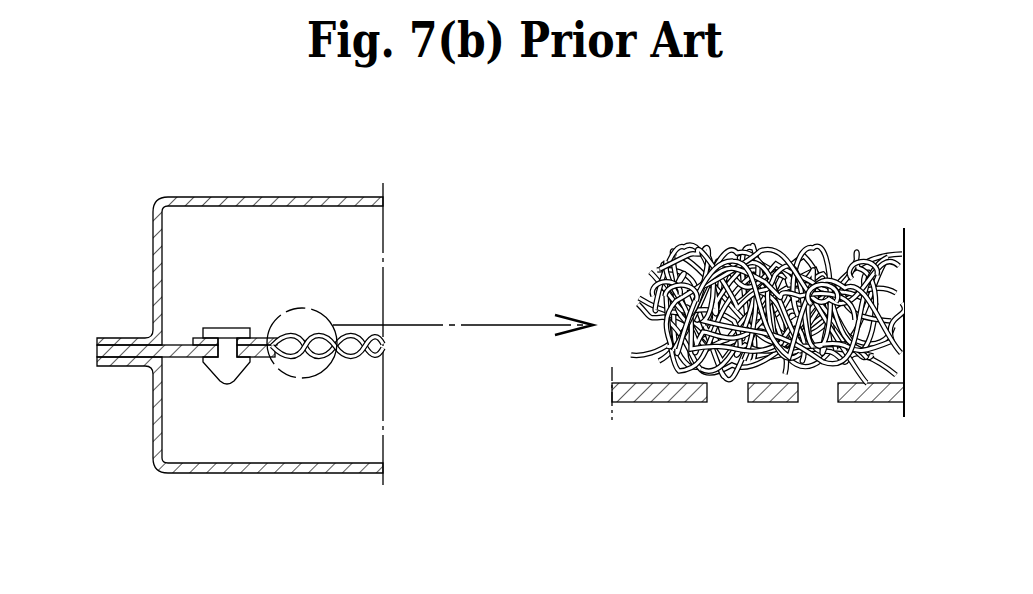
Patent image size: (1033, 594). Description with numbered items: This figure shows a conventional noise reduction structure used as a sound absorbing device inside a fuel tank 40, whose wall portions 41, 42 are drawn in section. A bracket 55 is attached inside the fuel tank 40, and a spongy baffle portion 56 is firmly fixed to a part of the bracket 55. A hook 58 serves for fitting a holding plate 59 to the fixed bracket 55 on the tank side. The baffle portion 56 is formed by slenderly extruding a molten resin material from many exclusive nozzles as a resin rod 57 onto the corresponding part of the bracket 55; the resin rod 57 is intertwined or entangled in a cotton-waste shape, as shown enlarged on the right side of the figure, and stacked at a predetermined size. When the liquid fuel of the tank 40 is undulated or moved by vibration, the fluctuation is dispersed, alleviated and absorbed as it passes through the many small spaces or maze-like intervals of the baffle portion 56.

The fuel tank 40 is at (225, 300).
The upper housing wall 41 is at (158, 263).
The lower housing wall 42 is at (158, 418).
The bracket 55 is at (258, 352).
The spongy baffle portion 56 is at (707, 232).
The resin rod 57 is at (792, 247).
The hook 58 is at (240, 328).
The holding plate 59 is at (185, 340).